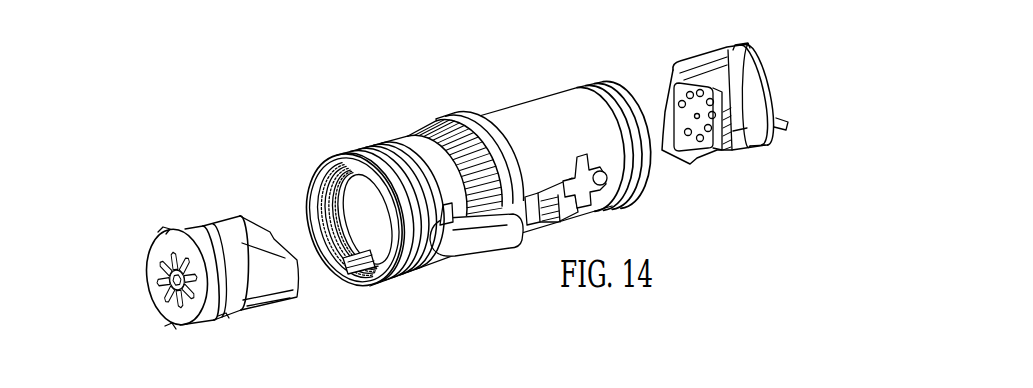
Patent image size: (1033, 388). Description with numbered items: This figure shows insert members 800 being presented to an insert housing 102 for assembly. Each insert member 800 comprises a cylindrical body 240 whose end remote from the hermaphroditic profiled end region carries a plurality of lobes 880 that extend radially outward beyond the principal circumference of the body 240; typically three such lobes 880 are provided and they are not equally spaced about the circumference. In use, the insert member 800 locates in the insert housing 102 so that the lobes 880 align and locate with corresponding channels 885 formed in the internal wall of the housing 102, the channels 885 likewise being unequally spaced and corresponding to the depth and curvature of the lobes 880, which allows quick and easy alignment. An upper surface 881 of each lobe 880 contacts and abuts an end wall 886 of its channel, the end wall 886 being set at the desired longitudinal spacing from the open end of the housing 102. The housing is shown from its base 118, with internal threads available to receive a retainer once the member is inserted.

The insert housing 102 is at (493, 100).
The base 118 is at (308, 190).
The end wall 886 is at (316, 166).
The channel 885 is at (352, 276).
The cylindrical body 240 is at (265, 306).
The lobe 880 is at (162, 231).
The insert member 800 is at (682, 54).
The upper surface 881 is at (773, 138).